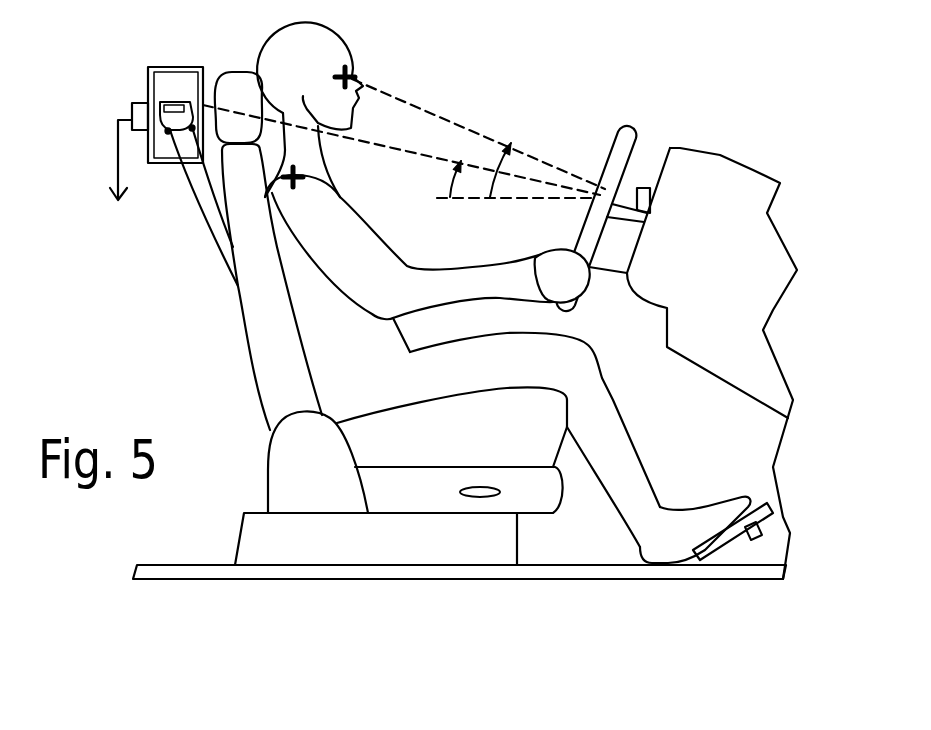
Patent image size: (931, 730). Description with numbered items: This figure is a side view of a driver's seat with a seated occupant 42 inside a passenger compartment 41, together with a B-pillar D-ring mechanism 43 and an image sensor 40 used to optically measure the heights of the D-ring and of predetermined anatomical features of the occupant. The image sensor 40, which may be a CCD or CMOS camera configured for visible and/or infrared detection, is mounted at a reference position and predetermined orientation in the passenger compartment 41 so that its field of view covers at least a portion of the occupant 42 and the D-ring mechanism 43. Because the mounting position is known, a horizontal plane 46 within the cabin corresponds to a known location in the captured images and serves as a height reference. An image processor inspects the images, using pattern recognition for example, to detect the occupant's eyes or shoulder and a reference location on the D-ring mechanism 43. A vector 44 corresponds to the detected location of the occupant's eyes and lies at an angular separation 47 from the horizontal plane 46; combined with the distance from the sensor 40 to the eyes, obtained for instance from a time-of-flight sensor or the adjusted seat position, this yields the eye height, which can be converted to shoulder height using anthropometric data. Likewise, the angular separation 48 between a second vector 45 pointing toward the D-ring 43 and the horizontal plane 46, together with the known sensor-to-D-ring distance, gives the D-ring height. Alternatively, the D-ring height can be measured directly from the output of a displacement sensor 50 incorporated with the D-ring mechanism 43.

The image sensor 40 is at (647, 188).
The passenger compartment 41 is at (735, 452).
The occupant 42 is at (320, 300).
The D-ring mechanism 43 is at (133, 83).
The vector 44 is at (400, 100).
The vector 45 is at (418, 150).
The horizontal plane 46 is at (531, 199).
The angular separation 47 is at (502, 182).
The camera angle 48 is at (450, 181).
The displacement sensor 50 is at (132, 110).